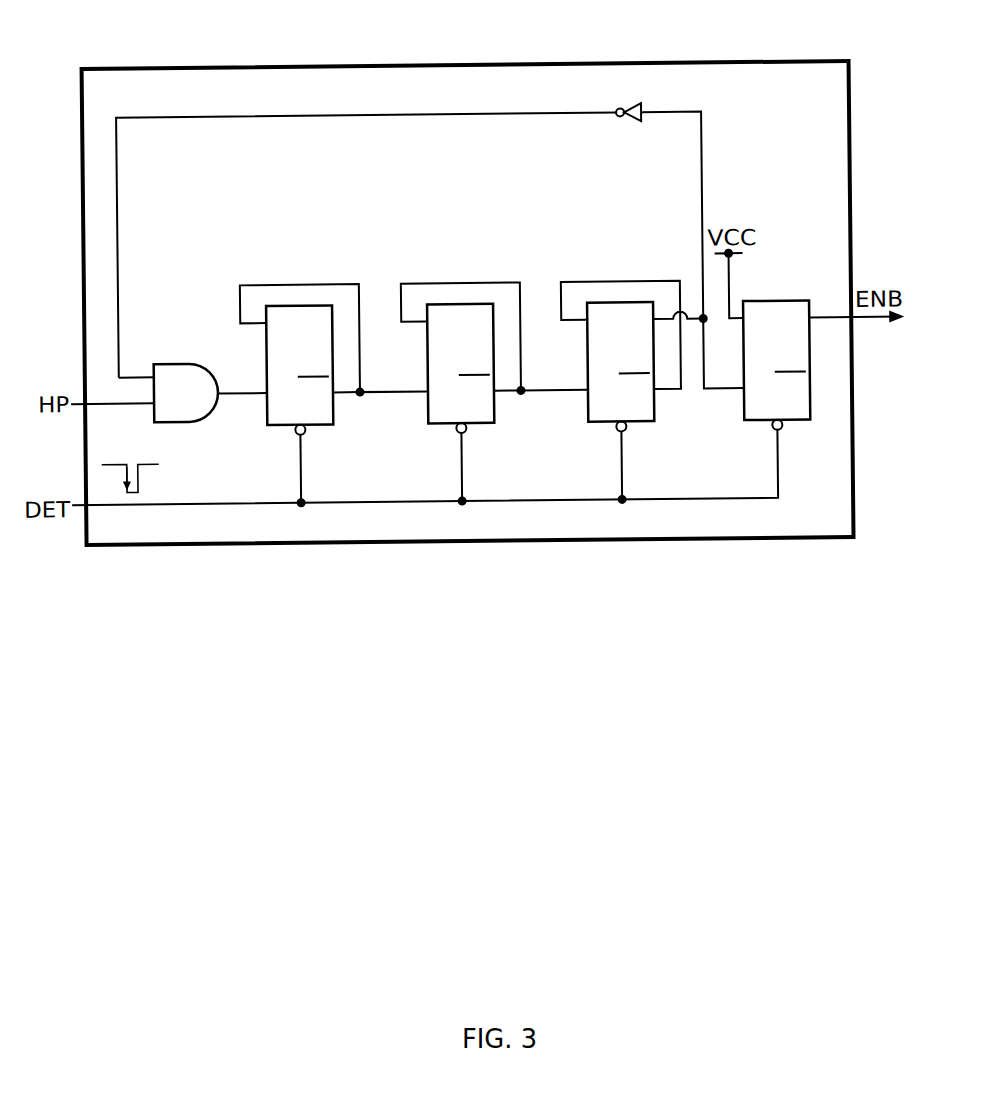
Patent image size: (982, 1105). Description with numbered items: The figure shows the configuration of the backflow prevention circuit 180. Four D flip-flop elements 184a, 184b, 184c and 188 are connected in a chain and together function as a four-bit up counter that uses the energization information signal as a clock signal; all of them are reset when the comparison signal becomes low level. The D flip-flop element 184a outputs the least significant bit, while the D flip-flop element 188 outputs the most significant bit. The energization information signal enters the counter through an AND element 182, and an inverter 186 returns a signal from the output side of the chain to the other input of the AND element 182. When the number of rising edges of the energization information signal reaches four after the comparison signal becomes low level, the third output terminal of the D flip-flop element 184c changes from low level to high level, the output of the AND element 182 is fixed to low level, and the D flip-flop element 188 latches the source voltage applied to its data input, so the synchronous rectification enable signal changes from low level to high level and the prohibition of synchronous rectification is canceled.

The backflow prevention circuit 180 is at (770, 69).
The AND element 182 is at (177, 365).
The D flip-flop element 184a is at (326, 429).
The D flip-flop element 184b is at (487, 429).
The D flip-flop element 184c is at (647, 429).
The inverter 186 is at (638, 111).
The D flip-flop element 188 is at (800, 429).